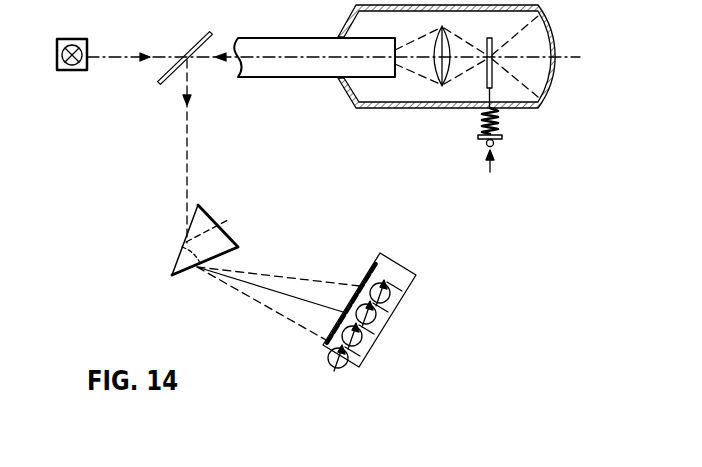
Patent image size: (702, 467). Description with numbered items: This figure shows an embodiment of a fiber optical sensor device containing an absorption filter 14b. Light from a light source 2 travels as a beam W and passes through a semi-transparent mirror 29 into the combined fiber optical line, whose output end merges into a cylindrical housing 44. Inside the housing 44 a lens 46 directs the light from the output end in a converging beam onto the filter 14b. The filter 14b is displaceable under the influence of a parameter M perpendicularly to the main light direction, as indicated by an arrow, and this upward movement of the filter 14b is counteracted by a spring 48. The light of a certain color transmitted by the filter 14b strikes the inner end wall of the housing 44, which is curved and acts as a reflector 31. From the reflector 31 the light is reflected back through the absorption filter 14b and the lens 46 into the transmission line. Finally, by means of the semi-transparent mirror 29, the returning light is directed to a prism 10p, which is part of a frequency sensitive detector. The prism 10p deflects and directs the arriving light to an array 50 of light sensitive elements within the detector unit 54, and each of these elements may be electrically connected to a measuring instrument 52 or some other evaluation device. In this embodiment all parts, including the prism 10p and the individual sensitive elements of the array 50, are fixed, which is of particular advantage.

The light source 2 is at (65, 73).
The light beam W is at (114, 52).
The semi-transparent mirror 29 is at (158, 85).
The cylindrical housing 44 is at (358, 108).
The lens 46 is at (438, 85).
The absorption filter 14b is at (492, 76).
The reflector 31 is at (548, 80).
The spring 48 is at (486, 118).
The parameter M is at (490, 172).
The prism 10p is at (204, 235).
The detector array 54 is at (400, 272).
The array of light sensitive elements 50 is at (322, 346).
The measuring instrument 52 is at (328, 366).